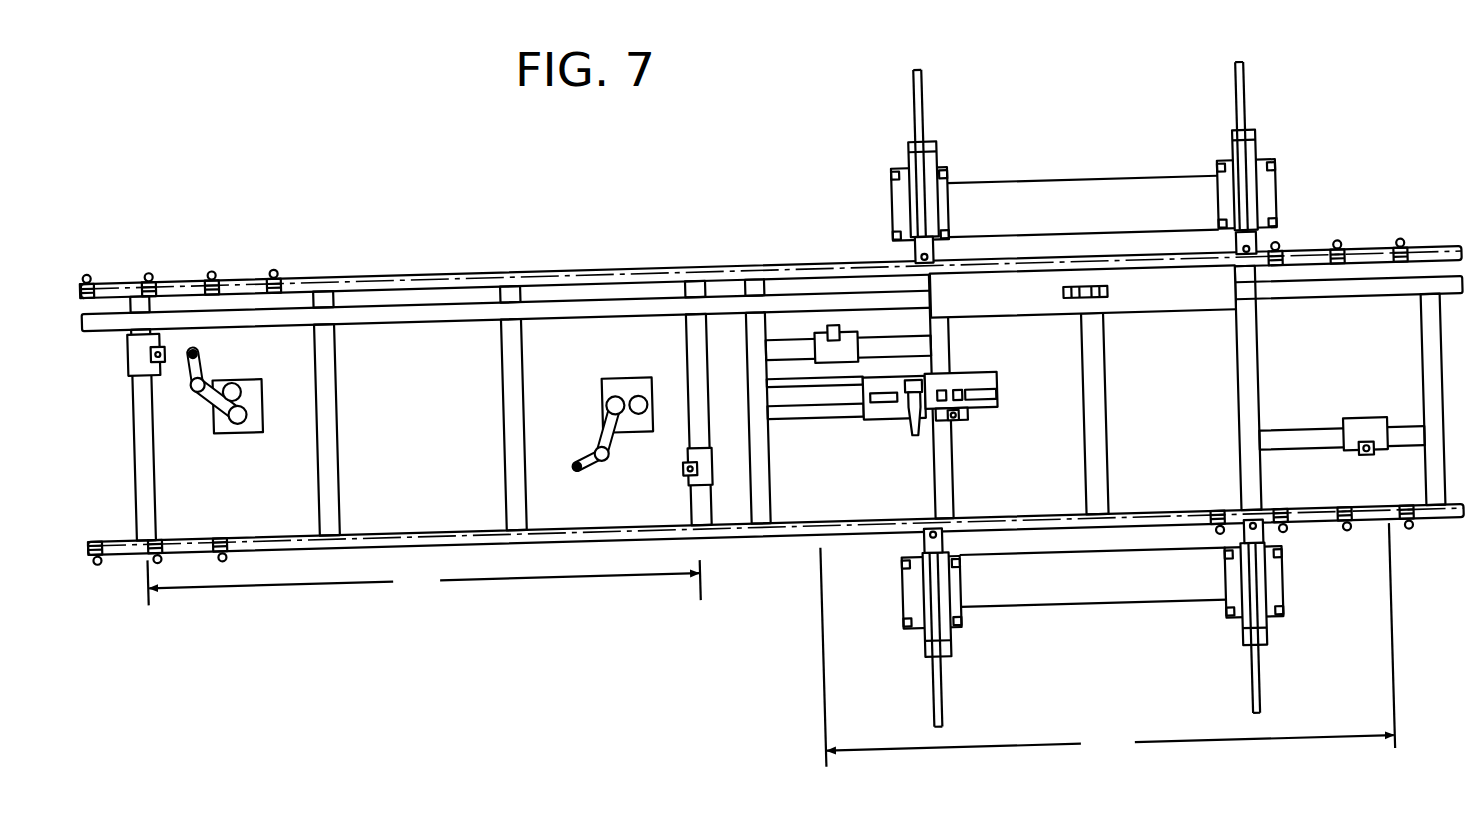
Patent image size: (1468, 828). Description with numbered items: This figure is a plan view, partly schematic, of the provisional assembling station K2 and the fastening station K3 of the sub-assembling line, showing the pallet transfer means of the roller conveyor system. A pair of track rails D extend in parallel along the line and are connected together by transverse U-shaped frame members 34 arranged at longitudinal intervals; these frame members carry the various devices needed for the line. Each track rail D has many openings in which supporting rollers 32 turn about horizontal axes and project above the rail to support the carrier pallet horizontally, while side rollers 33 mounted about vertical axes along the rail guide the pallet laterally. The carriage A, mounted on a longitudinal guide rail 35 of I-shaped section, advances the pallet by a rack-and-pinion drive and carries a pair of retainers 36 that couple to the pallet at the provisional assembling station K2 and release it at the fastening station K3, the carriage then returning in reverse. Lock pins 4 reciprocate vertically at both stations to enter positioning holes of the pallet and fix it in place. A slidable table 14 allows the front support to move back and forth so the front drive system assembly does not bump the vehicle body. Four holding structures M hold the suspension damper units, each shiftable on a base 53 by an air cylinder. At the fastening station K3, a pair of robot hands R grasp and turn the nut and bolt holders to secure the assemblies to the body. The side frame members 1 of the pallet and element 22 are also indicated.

The lengthwise side frame member 1 is at (912, 429).
The lock pin 4 is at (163, 367).
The slidable table 14 is at (873, 431).
The carriage 22 is at (948, 446).
The supporting roller 32 is at (1404, 297).
The side roller 33 is at (1402, 275).
The U-shaped frame member 34 is at (334, 449).
The guide rail 35 is at (1316, 333).
The retainer 36 is at (1081, 326).
The base 53 is at (1086, 215).
The carriage A is at (1160, 343).
The track rail D is at (565, 287).
The holding structure M is at (890, 210).
The robot hand R is at (212, 450).
The provisional assembling station K2 is at (1107, 645).
The fastening station K3 is at (423, 580).